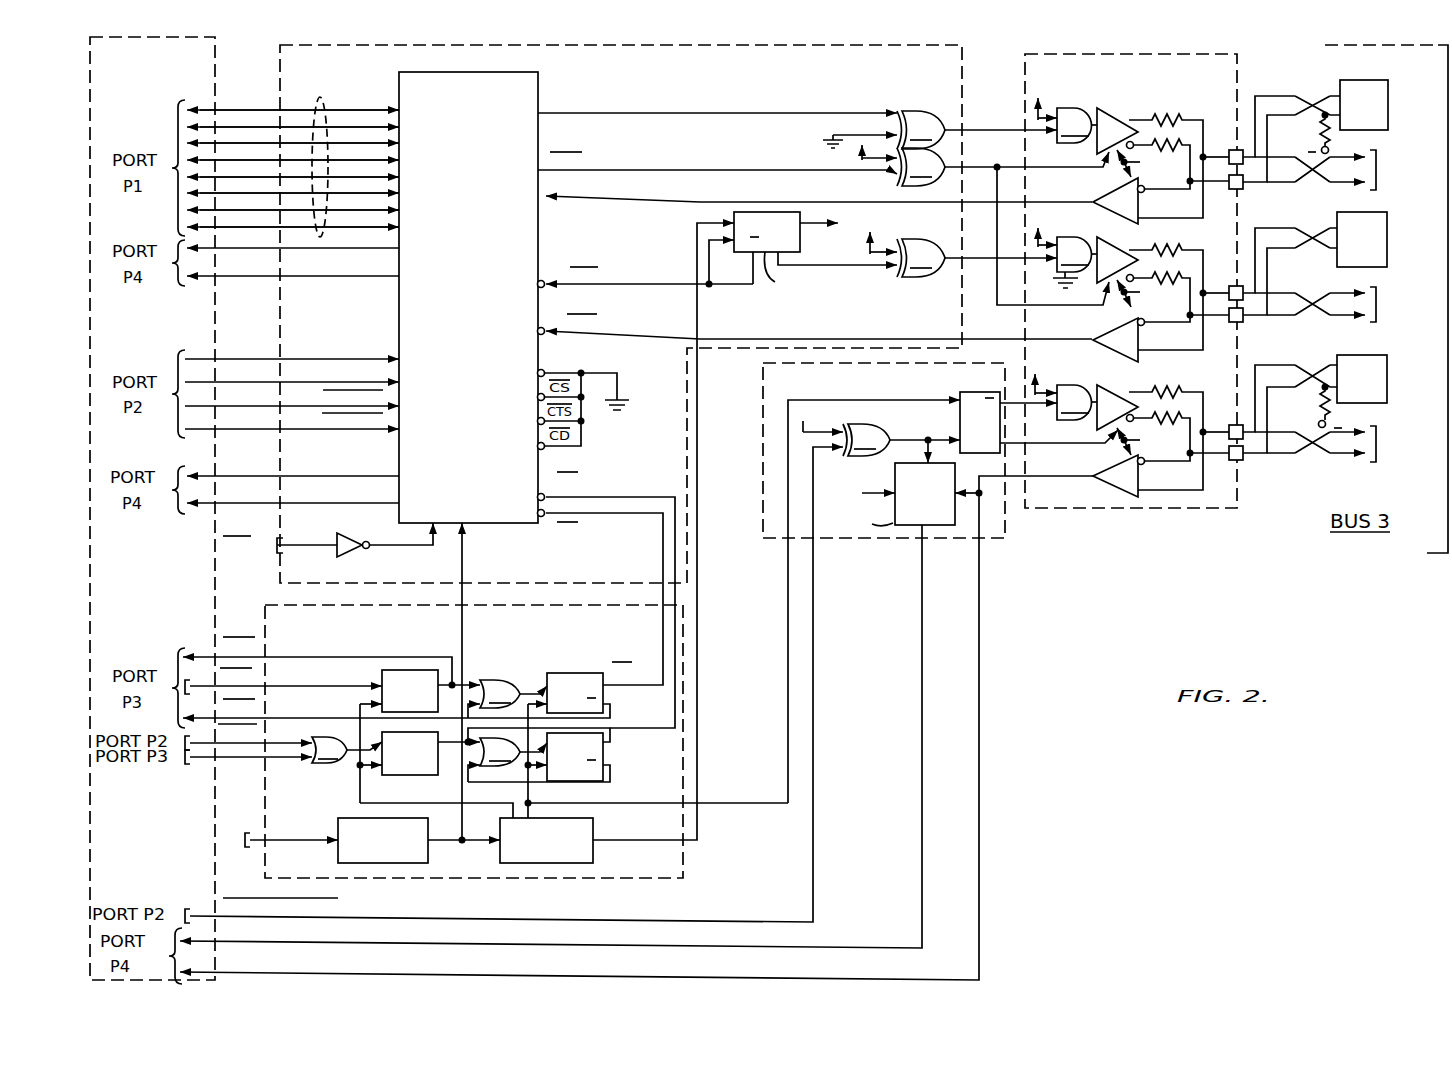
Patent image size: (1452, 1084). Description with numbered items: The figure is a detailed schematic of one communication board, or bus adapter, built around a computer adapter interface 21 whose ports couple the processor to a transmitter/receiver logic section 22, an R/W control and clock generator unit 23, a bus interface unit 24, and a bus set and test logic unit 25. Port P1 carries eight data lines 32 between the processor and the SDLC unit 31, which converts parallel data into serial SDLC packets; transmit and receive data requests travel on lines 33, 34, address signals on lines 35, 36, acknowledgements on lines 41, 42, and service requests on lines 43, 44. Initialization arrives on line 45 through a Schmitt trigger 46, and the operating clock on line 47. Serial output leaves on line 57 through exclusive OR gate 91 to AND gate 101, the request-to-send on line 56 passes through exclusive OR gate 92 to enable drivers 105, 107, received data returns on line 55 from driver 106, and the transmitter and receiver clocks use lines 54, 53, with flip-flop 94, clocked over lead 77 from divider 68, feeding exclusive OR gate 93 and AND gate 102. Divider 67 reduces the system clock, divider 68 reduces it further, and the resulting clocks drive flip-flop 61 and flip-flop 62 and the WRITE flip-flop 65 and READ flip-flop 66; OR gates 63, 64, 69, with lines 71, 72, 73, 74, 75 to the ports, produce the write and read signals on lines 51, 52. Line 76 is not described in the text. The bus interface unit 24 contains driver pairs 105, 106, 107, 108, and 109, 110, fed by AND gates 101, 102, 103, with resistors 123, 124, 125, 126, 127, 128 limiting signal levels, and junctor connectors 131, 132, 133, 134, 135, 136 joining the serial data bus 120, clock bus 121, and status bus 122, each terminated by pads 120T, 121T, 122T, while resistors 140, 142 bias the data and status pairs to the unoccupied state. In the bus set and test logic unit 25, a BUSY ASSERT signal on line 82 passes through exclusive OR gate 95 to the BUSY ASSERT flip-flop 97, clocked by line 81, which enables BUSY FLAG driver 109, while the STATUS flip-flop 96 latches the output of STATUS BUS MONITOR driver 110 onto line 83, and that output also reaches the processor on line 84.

The computer adapter interface 21 is at (218, 60).
The transmitter/receiver logic section 22 is at (963, 97).
The R/W control and clock generator unit 23 is at (588, 612).
The bus interface unit 24 is at (1245, 79).
The bus set and test logic unit 25 is at (1012, 545).
The SDLC unit 31 is at (482, 107).
The data lines 32 is at (321, 97).
The transmit data request line 33 is at (266, 256).
The receive data request line 34 is at (266, 285).
The address line 35 is at (276, 365).
The address line 36 is at (276, 390).
The transmit acknowledgement line 41 is at (276, 413).
The receive acknowledgement line 42 is at (276, 438).
The transmit service request line 43 is at (274, 482).
The receive service request line 44 is at (274, 510).
The initialization line 45 is at (316, 545).
The Schmitt trigger 46 is at (355, 554).
The clock line 47 is at (465, 555).
The write line 51 is at (613, 524).
The read line 52 is at (624, 492).
The receiver clock line 53 is at (652, 332).
The transmitter clock line 54 is at (652, 284).
The received data line 55 is at (648, 199).
The request-to-send line 56 is at (648, 172).
The transmit data line 57 is at (648, 116).
The flip-flop 61 is at (381, 679).
The flip-flop 62 is at (428, 790).
The OR gate 63 is at (507, 699).
The OR gate 64 is at (507, 760).
The WRITE flip-flop 65 is at (576, 673).
The READ flip-flop 66 is at (603, 778).
The divider 67 is at (428, 858).
The divider 68 is at (593, 858).
The OR gate 69 is at (347, 750).
The acknowledge line 71 is at (314, 663).
The output buffer full line 72 is at (316, 695).
The read strobe lead 73 is at (316, 725).
The read-out control line 74 is at (302, 752).
The input buffer full line 75 is at (276, 768).
The clock input 76 is at (320, 838).
The clock lead 77 is at (700, 838).
The clock line 81 is at (788, 596).
The busy assert line 82 is at (814, 598).
The busy status line 83 is at (925, 598).
The busy status/interrupt line 84 is at (502, 978).
The exclusive OR gate 91 is at (940, 130).
The exclusive OR gate 92 is at (985, 221).
The exclusive OR gate 93 is at (960, 243).
The flip-flop 94 is at (732, 216).
The exclusive OR gate 95 is at (878, 433).
The STATUS flip-flop 96 is at (935, 528).
The BUSY ASSERT flip-flop 97 is at (996, 456).
The AND gate 101 is at (1062, 109).
The AND gate 102 is at (1062, 246).
The AND gate 103 is at (1060, 385).
The transmit-output driver 105 is at (1116, 112).
The driver 106 is at (1110, 194).
The transmit-output driver 107 is at (1102, 238).
The driver 108 is at (1110, 334).
The BUSY FLAG driver 109 is at (1108, 385).
The STATUS BUS MONITOR driver 110 is at (1112, 474).
The serial data bus 120 is at (1324, 180).
The resistor terminator pad 120T is at (1388, 80).
The clock bus 121 is at (1346, 297).
The resistor terminator pad 121T is at (1387, 222).
The status bus 122 is at (1342, 458).
The resistor terminator pad 122T is at (1372, 356).
The resistor 123 is at (1175, 114).
The resistor 124 is at (1182, 166).
The resistor 125 is at (1179, 250).
The resistor 126 is at (1182, 300).
The resistor 127 is at (1179, 392).
The resistor 128 is at (1174, 438).
The junctor connector 131 is at (1233, 148).
The junctor connector 132 is at (1240, 190).
The junctor connector 133 is at (1234, 284).
The junctor connector 134 is at (1240, 323).
The junctor connector 135 is at (1233, 423).
The junctor connector 136 is at (1240, 461).
The resistor 140 is at (1320, 127).
The resistor 142 is at (1318, 408).